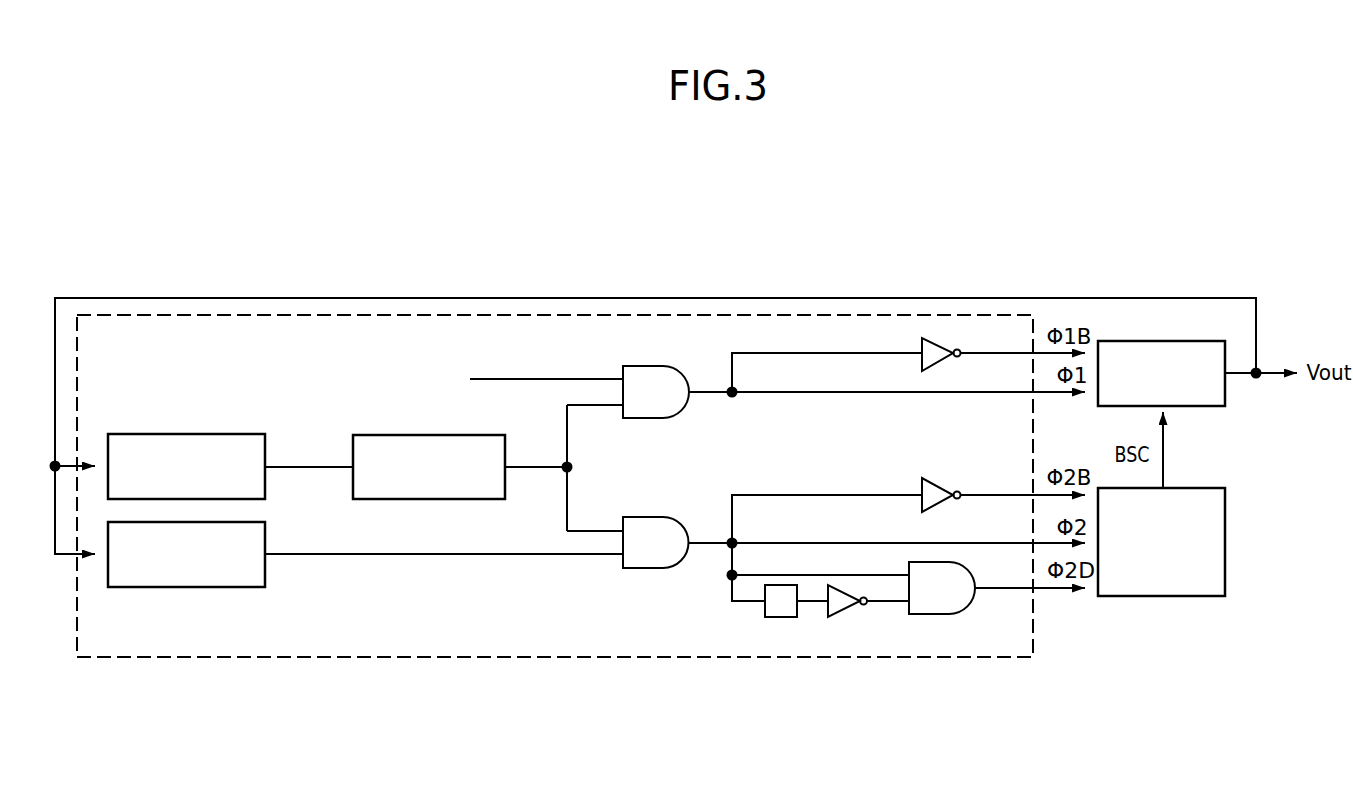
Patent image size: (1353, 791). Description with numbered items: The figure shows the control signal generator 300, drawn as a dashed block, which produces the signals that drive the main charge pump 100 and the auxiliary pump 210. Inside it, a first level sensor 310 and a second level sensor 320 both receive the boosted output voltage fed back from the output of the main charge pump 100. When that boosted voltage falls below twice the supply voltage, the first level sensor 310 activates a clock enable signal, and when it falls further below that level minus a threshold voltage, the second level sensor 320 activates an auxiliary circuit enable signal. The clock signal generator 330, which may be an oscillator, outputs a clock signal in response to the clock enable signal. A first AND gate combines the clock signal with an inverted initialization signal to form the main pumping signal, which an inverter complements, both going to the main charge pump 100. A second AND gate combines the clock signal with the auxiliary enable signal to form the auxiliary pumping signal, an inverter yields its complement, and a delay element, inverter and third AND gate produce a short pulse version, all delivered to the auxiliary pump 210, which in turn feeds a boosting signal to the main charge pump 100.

The main charge pump 100 is at (1200, 406).
The auxiliary pump 210 is at (1200, 596).
The control signal generator 300 is at (1000, 657).
The first level sensor 310 is at (242, 434).
The second level sensor 320 is at (242, 587).
The clock signal generator 330 is at (473, 499).